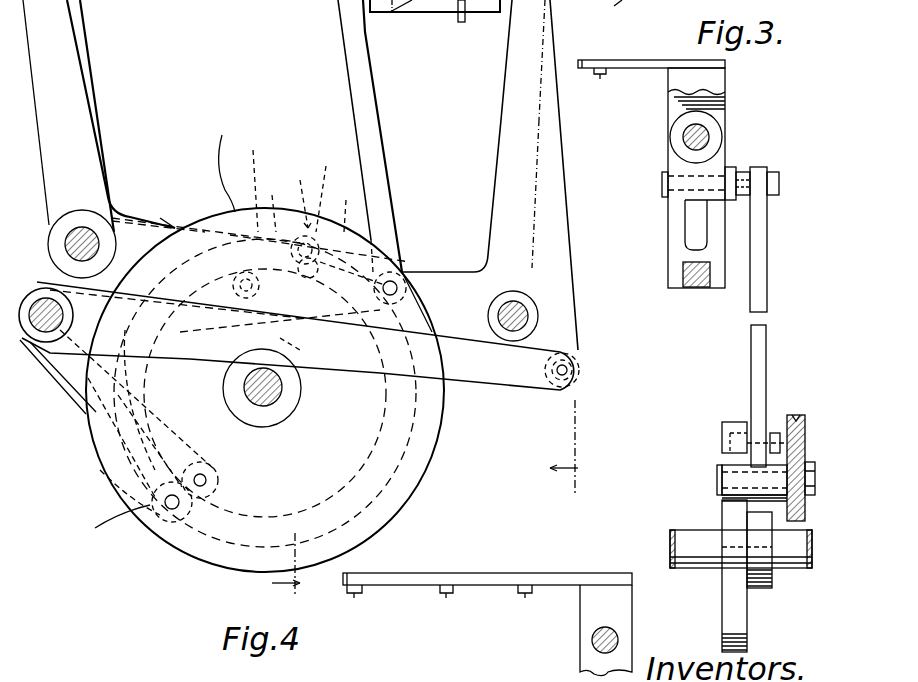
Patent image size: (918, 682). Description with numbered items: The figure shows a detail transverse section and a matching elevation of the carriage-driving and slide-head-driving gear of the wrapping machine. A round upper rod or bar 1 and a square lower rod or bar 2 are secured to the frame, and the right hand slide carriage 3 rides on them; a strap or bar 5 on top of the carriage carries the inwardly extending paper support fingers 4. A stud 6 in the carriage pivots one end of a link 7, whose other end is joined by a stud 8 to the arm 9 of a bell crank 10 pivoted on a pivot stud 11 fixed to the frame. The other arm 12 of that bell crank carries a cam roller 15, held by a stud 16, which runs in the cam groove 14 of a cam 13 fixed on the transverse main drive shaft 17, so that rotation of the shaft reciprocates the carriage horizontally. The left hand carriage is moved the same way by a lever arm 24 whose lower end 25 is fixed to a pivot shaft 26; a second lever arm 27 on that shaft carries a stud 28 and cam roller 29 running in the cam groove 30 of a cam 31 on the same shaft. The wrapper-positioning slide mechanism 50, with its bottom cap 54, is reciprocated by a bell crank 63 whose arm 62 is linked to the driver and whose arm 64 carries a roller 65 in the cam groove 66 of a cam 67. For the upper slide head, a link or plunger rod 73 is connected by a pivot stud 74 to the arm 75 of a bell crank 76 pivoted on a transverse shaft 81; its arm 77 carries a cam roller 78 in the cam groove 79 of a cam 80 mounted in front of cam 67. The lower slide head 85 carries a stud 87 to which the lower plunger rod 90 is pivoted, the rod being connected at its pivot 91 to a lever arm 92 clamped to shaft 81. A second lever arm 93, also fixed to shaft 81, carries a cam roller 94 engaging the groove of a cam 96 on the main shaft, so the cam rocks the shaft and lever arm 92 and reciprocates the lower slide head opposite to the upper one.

In FIG. 4, the upper rod or bar 1 is at (618, 640).
In FIG. 3, the upper rod or bar 1 is at (710, 137).
In FIG. 3, the lower rod or bar 2 is at (697, 289).
In FIG. 4, the slide carriage 3 is at (625, 612).
In FIG. 3, the slide carriage 3 is at (727, 97).
In FIG. 4, the fingers 4 is at (354, 590).
In FIG. 3, the fingers 4 is at (605, 75).
In FIG. 4, the strap or bar 5 is at (604, 573).
In FIG. 3, the strap or bar 5 is at (648, 60).
In FIG. 4, the stud 6 is at (294, 564).
In FIG. 3, the stud 6 is at (662, 183).
In FIG. 3, the link 7 is at (733, 167).
In FIG. 3, the stud 8 is at (778, 175).
In FIG. 4, the arm 9 is at (506, 77).
In FIG. 3, the arm 9 is at (767, 292).
In FIG. 4, the bell crank 10 is at (492, 188).
In FIG. 3, the bell crank 10 is at (767, 342).
In FIG. 4, the pivot stud 11 is at (497, 300).
In FIG. 3, the pivot stud 11 is at (717, 480).
In FIG. 4, the arm 12 is at (411, 260).
In FIG. 4, the cam 13 is at (385, 410).
In FIG. 3, the cam 13 is at (733, 422).
In FIG. 4, the cam groove 14 is at (280, 290).
In FIG. 3, the cam groove 14 is at (722, 439).
In FIG. 4, the cam roller 15 is at (235, 290).
In FIG. 3, the cam roller 15 is at (722, 451).
In FIG. 4, the stud 16 is at (292, 250).
In FIG. 3, the stud 16 is at (779, 430).
In FIG. 4, the main drive shaft 17 is at (269, 405).
In FIG. 3, the main drive shaft 17 is at (682, 536).
In FIG. 4, the lever arm 24 is at (70, 36).
In FIG. 4, the lower end 25 is at (60, 218).
In FIG. 4, the pivot shaft 26 is at (65, 245).
In FIG. 4, the second lever arm 27 is at (244, 183).
In FIG. 4, the stud 28 is at (318, 279).
In FIG. 4, the cam roller 29 is at (266, 205).
In FIG. 4, the cam groove 30 is at (348, 208).
In FIG. 4, the cam 31 is at (212, 230).
In FIG. 4, the slide mechanism 50 is at (419, 17).
In FIG. 4, the bottom cap 54 is at (445, 14).
In FIG. 4, the arm 62 is at (100, 117).
In FIG. 4, the bell crank 63 is at (130, 210).
In FIG. 4, the arm 64 is at (164, 220).
In FIG. 4, the roller 65 is at (328, 189).
In FIG. 4, the cam groove 66 is at (300, 196).
In FIG. 4, the cam 67 is at (112, 568).
In FIG. 4, the link or plunger rod 73 is at (340, 35).
In FIG. 4, the pivot stud 74 is at (405, 288).
In FIG. 4, the arm 75 is at (247, 388).
In FIG. 4, the bell crank 76 is at (140, 379).
In FIG. 4, the arm 77 is at (186, 421).
In FIG. 4, the cam roller 78 is at (216, 487).
In FIG. 4, the cam groove 79 is at (222, 470).
In FIG. 4, the cam 80 is at (418, 474).
In FIG. 4, the transverse shaft 81 is at (42, 297).
In FIG. 4, the lower slide head 85 is at (387, 16).
In FIG. 4, the stud 87 is at (606, 8).
In FIG. 4, the link or lower plunger rod 90 is at (565, 186).
In FIG. 4, the pivot connection 91 is at (576, 365).
In FIG. 4, the lever arm 92 is at (517, 373).
In FIG. 4, the second lever arm 93 is at (69, 410).
In FIG. 4, the cam roller 94 is at (110, 535).
In FIG. 4, the cam 96 is at (95, 528).